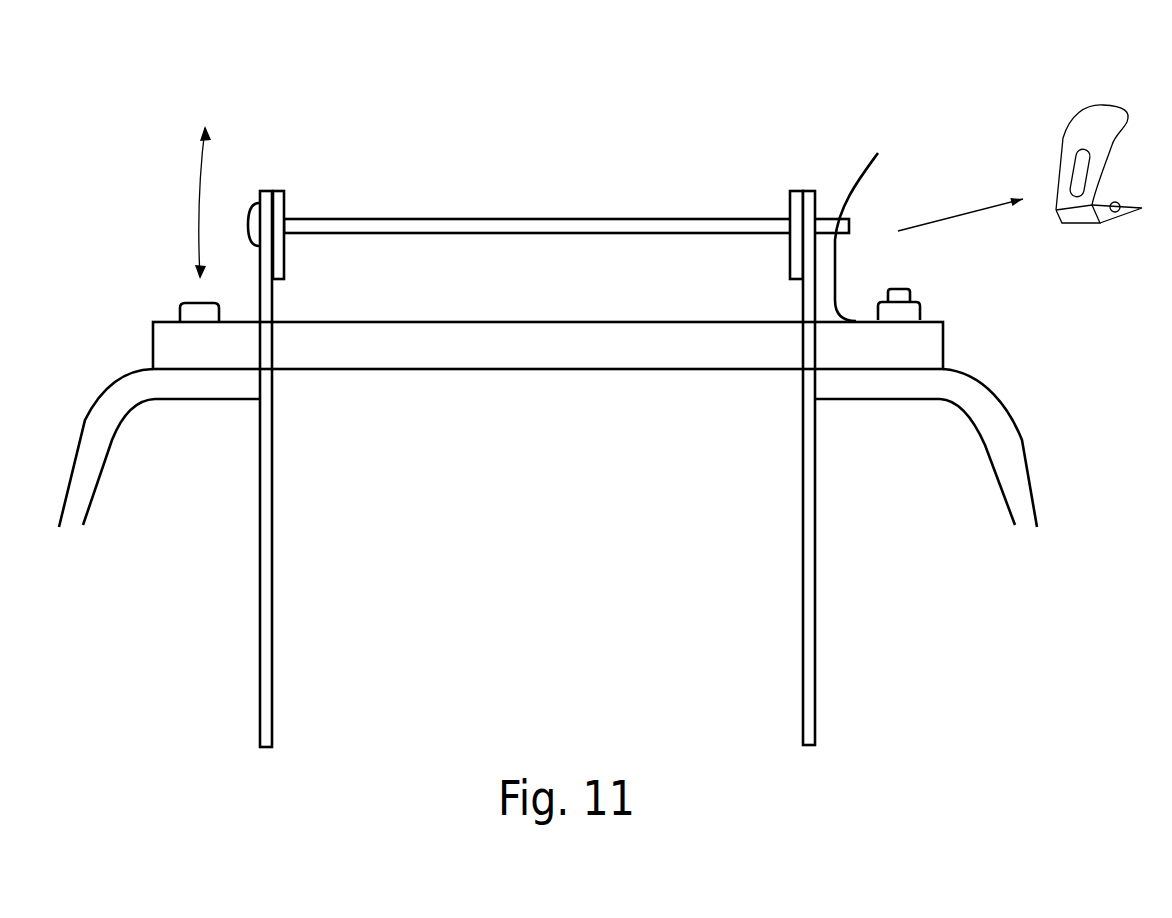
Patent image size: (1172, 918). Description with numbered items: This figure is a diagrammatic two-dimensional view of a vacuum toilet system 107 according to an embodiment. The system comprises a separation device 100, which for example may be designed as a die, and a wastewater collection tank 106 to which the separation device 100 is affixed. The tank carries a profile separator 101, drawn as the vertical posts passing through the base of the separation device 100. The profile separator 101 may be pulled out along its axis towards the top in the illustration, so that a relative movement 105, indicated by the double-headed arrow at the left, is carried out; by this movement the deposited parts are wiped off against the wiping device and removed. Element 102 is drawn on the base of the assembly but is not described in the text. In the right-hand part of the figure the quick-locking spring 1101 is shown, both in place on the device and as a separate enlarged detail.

The separation device 100 is at (660, 173).
The profile separator 101 is at (817, 565).
The base plate 102 is at (467, 322).
The relative movement 105 is at (195, 190).
The wastewater collection tank 106 is at (1033, 485).
The vacuum toilet system 107 is at (970, 97).
The quick-locking spring 1101 is at (840, 279).